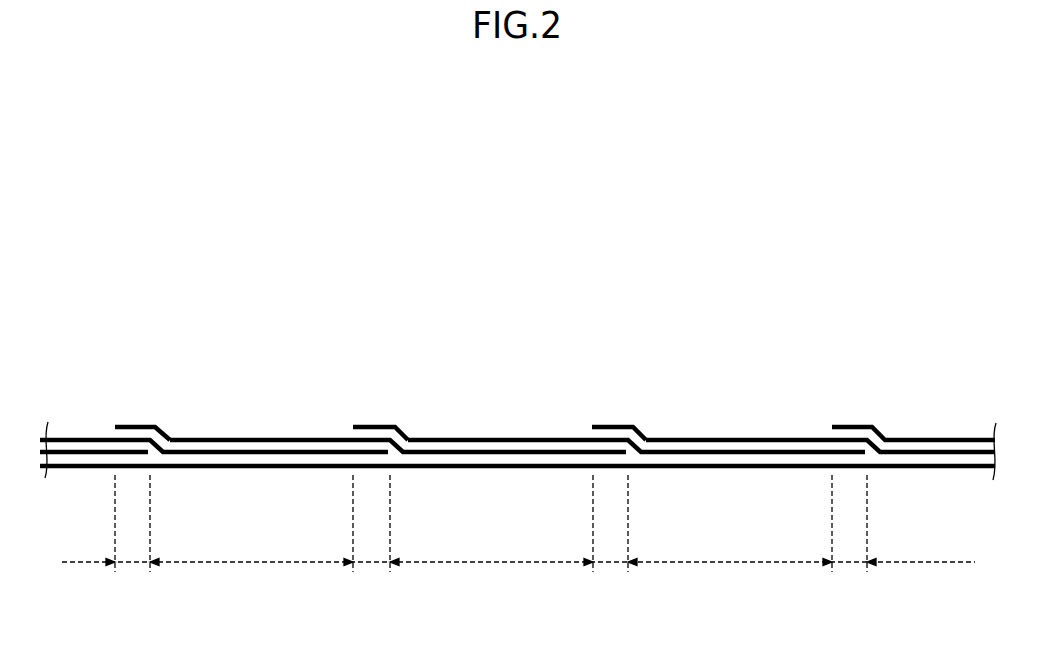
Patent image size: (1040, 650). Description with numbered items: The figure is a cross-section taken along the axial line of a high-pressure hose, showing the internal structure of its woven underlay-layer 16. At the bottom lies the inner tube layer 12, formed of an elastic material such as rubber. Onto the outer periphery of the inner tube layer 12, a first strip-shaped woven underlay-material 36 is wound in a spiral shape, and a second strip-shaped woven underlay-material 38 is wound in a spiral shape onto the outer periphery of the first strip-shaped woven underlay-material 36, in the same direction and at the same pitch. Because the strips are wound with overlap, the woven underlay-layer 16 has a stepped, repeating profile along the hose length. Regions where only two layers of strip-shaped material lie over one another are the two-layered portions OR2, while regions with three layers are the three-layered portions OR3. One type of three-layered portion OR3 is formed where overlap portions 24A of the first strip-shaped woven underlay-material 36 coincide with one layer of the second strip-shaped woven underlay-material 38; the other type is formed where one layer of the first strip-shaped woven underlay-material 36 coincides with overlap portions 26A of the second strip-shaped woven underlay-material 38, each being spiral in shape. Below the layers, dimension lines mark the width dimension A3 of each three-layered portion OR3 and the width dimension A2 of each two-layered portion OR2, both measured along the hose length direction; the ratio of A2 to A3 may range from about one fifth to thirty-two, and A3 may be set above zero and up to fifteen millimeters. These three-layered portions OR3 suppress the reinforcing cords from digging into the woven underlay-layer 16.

The inner tube layer 12 is at (970, 464).
The woven underlay-layer 16 is at (897, 438).
The first strip-shaped woven underlay-material 36 is at (67, 430).
The second strip-shaped woven underlay-material 38 is at (272, 437).
The three-layered portion OR3 is at (137, 425).
The two-layered portion OR2 is at (688, 437).
The overlap portion 24A is at (353, 443).
The overlap portion 26A is at (595, 443).
The width dimension of three-layered portion A3 is at (849, 565).
The width dimension of two-layered portion A2 is at (950, 565).